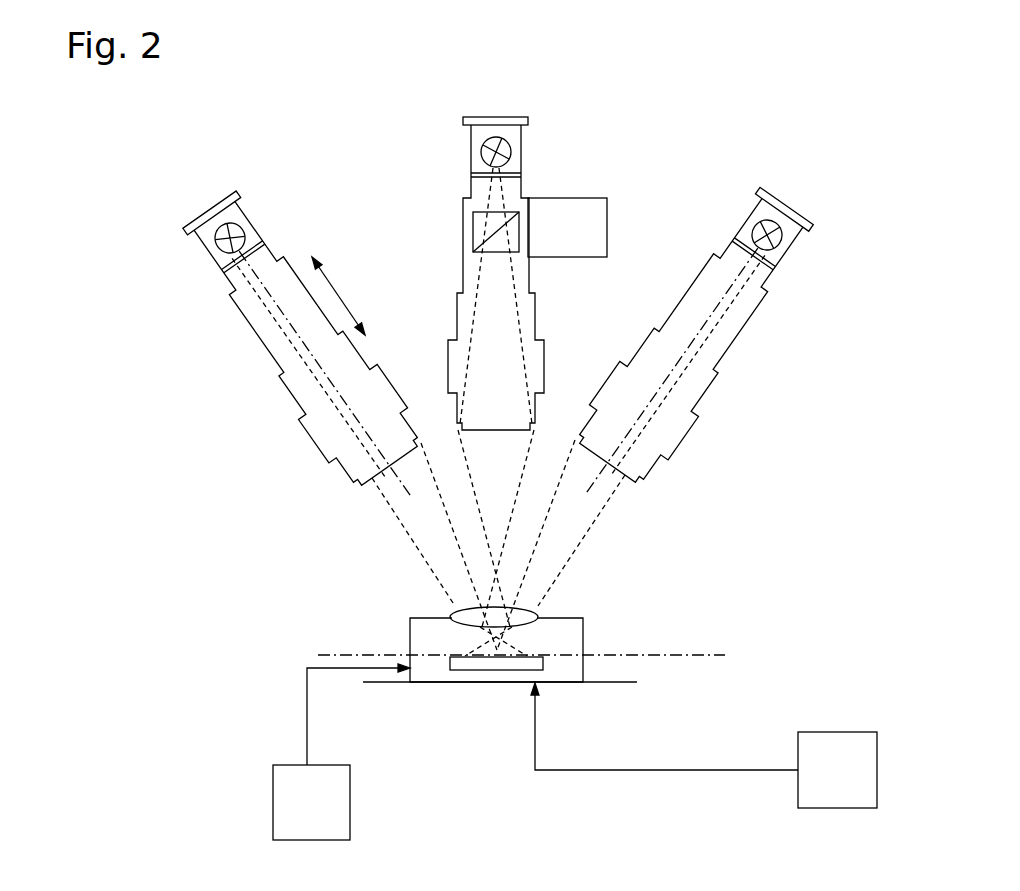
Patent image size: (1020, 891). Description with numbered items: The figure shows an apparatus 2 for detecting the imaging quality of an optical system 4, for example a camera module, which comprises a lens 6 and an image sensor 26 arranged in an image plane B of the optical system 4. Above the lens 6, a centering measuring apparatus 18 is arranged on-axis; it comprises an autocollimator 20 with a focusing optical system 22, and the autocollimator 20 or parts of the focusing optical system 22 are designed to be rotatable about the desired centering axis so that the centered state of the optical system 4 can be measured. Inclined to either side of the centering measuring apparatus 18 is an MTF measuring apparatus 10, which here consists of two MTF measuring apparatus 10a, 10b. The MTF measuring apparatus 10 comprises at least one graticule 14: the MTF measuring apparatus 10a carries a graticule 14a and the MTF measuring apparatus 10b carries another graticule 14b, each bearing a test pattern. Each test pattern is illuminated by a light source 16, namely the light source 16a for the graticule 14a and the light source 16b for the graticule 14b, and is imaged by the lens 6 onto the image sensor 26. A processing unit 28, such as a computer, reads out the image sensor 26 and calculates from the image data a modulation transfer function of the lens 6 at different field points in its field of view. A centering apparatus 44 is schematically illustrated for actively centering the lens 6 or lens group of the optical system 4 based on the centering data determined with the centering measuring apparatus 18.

The apparatus 2 is at (697, 112).
The optical system 4 is at (420, 634).
The lens 6 is at (540, 612).
The MTF measuring apparatus 10 is at (530, 350).
The MTF measuring apparatus 10a is at (245, 318).
The MTF measuring apparatus 10b is at (742, 333).
The graticule 14 is at (538, 172).
The graticule 14a is at (258, 240).
The graticule 14b is at (779, 265).
The light source 16 is at (543, 152).
The light source 16a is at (252, 223).
The light source 16b is at (774, 250).
The centering measuring apparatus 18 is at (521, 117).
The autocollimator 20 is at (537, 277).
The focusing optical system 22 is at (529, 319).
The image sensor 26 is at (467, 672).
The processing unit 28 is at (851, 785).
The centering apparatus 44 is at (325, 818).
The image plane B is at (700, 655).